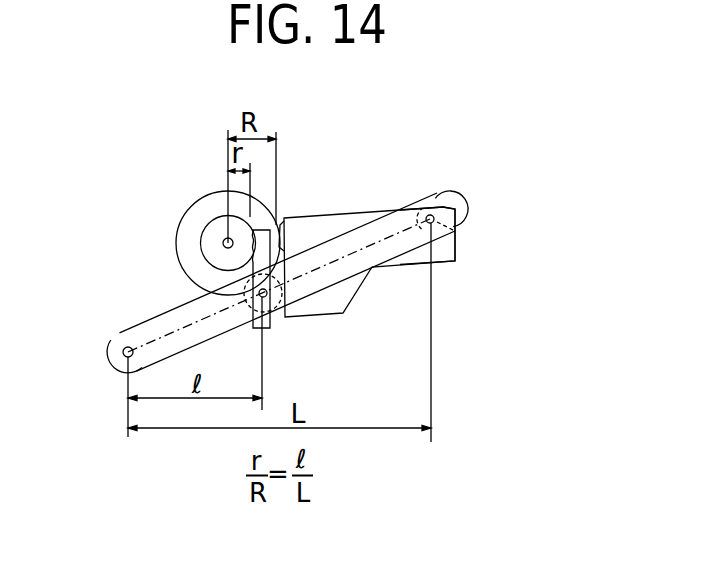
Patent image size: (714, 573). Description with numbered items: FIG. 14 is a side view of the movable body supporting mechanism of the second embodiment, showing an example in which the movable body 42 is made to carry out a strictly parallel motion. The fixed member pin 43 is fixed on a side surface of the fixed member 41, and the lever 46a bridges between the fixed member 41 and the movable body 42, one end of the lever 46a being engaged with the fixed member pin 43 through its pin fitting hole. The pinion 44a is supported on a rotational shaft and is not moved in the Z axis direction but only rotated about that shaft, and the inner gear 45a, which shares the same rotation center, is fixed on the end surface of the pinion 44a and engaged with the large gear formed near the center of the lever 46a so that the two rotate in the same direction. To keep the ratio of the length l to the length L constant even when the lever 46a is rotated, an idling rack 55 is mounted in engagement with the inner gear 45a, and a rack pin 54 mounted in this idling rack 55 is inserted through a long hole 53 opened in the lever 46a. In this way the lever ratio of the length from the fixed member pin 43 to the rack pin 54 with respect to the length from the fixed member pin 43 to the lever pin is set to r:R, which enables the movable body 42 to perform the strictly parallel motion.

The fixed member 41 is at (438, 196).
The movable body 42 is at (457, 240).
The fixed member pin 43 is at (112, 357).
The pinion 44a is at (205, 212).
The inner gear 45a is at (210, 242).
The lever 46a is at (348, 250).
The long hole 53 is at (250, 300).
The rack pin 54 is at (270, 296).
The idling rack 55 is at (282, 243).